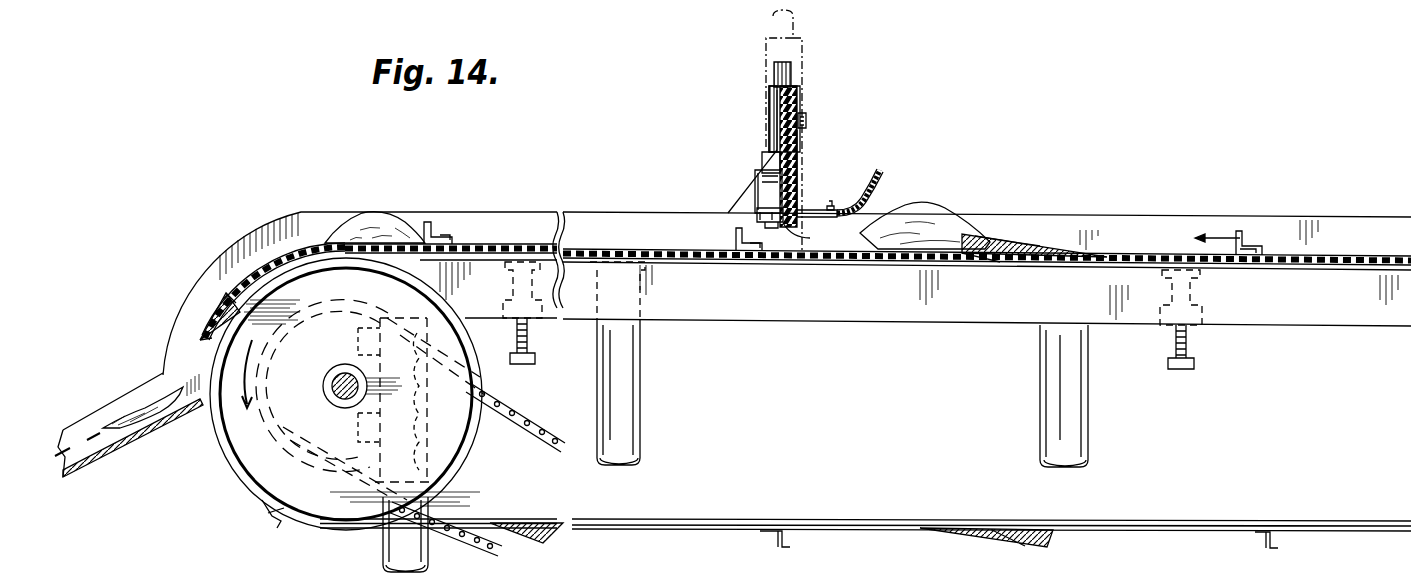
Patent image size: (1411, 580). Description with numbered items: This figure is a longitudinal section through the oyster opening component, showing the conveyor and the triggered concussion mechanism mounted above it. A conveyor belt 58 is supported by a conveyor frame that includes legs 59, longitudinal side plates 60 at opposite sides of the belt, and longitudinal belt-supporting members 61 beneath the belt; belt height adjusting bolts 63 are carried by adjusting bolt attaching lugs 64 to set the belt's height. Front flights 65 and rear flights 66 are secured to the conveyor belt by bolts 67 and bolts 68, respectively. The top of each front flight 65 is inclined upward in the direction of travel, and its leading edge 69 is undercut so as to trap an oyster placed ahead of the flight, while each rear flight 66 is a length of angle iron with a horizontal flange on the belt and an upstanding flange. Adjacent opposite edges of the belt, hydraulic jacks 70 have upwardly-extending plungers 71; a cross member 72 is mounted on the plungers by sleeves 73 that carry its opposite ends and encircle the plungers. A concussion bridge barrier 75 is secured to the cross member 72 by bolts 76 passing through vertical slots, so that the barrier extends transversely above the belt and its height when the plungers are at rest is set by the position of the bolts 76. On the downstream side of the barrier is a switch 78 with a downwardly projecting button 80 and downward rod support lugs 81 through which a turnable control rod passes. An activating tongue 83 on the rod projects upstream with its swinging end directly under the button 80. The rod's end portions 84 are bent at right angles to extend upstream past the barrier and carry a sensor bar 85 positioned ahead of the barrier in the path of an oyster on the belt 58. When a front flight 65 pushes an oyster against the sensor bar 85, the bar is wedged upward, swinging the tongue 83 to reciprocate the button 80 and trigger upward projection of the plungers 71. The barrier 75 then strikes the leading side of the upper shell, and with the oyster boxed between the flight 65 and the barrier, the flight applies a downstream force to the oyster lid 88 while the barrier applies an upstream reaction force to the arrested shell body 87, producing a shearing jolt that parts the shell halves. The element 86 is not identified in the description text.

The conveyor belt 58 is at (1178, 250).
The legs 59 is at (640, 387).
The longitudinal side plates 60 is at (326, 208).
The longitudinal belt-supporting members 61 is at (1290, 322).
The belt height adjusting bolts 63 is at (535, 358).
The adjusting bolt attaching lugs 64 is at (540, 322).
The front flights 65 is at (215, 318).
The rear flights 66 is at (432, 223).
The bolts 67 is at (228, 298).
The bolts 68 is at (455, 238).
The leading edge 69 is at (205, 333).
The hydraulic jacks 70 is at (785, 160).
The plungers 71 is at (795, 22).
The cross member 72 is at (782, 105).
The sleeves 73 is at (770, 92).
The concussion bridge barrier 75 is at (800, 142).
The bolts 76 is at (808, 122).
The switch 78 is at (765, 180).
The switch button 80 is at (812, 210).
The rod support lugs 81 is at (750, 212).
The activating tongue 83 is at (810, 238).
The end portions 84 is at (831, 203).
The sensor bar 85 is at (880, 190).
The product mound 86 is at (942, 195).
The shell body 87 is at (378, 215).
The oyster lid 88 is at (137, 415).